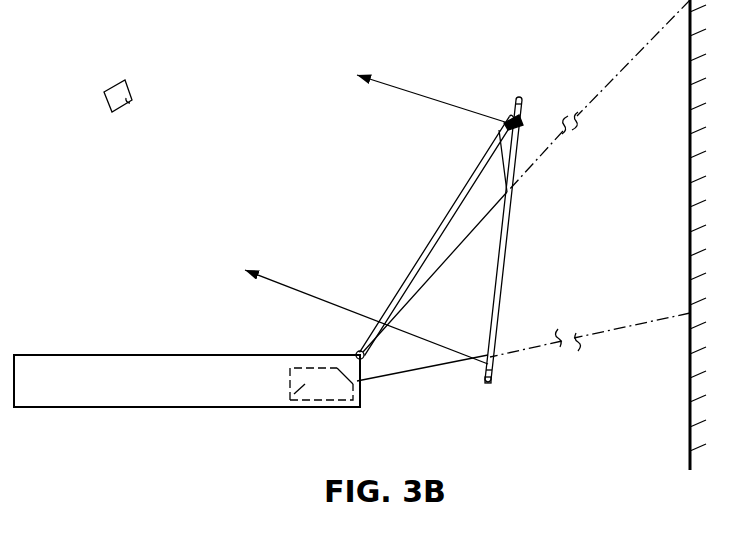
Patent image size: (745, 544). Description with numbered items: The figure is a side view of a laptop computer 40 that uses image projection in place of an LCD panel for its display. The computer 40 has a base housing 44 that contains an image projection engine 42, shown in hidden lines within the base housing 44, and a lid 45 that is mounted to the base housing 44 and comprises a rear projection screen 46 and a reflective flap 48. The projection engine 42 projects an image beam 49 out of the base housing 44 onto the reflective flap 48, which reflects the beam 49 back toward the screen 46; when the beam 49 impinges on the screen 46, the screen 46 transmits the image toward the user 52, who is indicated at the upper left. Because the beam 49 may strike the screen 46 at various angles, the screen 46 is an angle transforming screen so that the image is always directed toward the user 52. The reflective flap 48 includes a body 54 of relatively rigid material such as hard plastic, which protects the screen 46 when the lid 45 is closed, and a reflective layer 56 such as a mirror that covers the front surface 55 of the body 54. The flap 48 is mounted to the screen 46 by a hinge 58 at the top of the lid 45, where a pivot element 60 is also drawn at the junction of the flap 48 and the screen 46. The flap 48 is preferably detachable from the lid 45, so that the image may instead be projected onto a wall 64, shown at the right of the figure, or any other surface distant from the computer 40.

The computer 40 is at (137, 318).
The image projection engine 42 is at (292, 401).
The base housing 44 is at (27, 354).
The lid 45 is at (442, 210).
The rear projection screen 46 is at (407, 273).
The reflective flap 48 is at (517, 259).
The image beam 49 is at (398, 385).
The user 52 is at (110, 99).
The body 54 is at (497, 362).
The front surface 55 is at (492, 386).
The reflective layer 56 is at (485, 378).
The hinge 58 is at (519, 97).
The pivot bracket 60 is at (505, 118).
The wall 64 is at (688, 161).